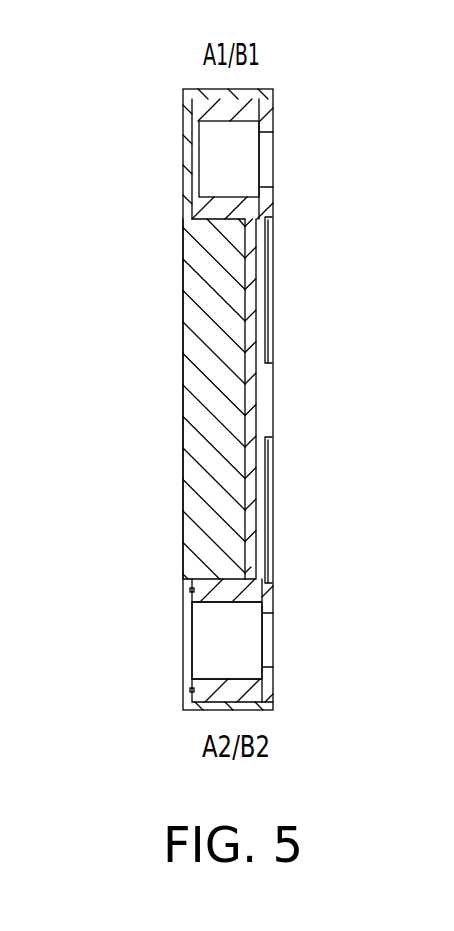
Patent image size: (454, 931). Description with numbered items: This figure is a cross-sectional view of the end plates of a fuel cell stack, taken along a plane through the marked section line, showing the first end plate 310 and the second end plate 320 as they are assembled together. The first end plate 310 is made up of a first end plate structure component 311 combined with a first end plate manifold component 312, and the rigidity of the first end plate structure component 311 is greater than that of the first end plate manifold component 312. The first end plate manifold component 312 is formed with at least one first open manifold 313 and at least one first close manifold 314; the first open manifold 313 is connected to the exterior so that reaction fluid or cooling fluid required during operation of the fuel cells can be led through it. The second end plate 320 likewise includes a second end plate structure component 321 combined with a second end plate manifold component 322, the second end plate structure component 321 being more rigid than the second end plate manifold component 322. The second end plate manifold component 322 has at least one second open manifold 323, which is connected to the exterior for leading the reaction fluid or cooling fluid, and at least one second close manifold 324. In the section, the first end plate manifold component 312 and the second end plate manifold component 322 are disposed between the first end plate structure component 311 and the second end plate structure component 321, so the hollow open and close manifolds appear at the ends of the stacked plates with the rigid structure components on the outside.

The first end plate 310 is at (139, 399).
The first end plate structure component 311 is at (218, 283).
The first end plate manifold component 312 is at (256, 358).
The first open manifold 313 is at (302, 640).
The first close manifold 314 is at (305, 159).
The second end plate 320 is at (327, 400).
The second end plate structure component 321 is at (227, 412).
The second end plate manifold component 322 is at (311, 510).
The second open manifold 323 is at (235, 679).
The second close manifold 324 is at (200, 163).